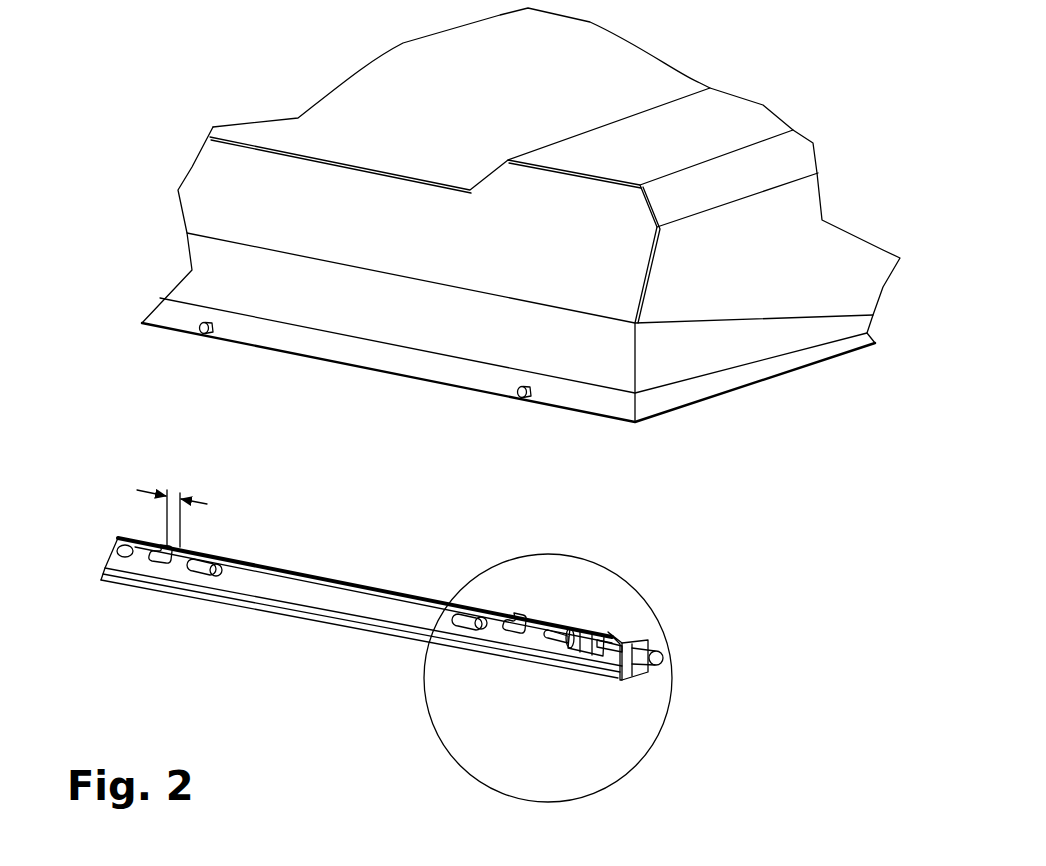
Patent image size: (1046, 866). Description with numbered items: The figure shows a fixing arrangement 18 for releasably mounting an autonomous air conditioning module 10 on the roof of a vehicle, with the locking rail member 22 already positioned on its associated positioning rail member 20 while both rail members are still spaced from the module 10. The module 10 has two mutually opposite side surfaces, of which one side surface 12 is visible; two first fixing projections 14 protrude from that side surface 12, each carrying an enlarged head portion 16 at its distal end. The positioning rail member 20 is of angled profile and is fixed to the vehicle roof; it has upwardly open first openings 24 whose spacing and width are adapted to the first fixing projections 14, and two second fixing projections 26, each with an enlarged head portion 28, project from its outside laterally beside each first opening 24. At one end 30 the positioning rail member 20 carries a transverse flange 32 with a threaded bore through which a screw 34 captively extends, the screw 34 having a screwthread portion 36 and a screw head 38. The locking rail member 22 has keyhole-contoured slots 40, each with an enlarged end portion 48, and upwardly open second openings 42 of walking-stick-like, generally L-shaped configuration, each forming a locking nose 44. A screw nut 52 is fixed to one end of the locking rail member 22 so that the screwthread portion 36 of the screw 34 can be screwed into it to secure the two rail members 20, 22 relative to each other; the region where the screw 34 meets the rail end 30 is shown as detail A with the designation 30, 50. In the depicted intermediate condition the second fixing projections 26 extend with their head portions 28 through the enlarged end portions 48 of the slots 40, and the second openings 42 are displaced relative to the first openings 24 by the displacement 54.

The autonomous air conditioning module 10 is at (387, 122).
The side surface 12 is at (370, 353).
The first fixing projection 14 is at (190, 340).
The enlarged head portion 16 is at (199, 327).
The fixing arrangement 18 is at (384, 633).
The positioning rail member 20 is at (361, 577).
The locking rail member 22 is at (352, 605).
The first opening 24 is at (184, 535).
The second fixing projection 26 is at (251, 668).
The enlarged head portion 28 is at (105, 577).
The end 30 is at (654, 737).
The transverse flange 32 is at (644, 640).
The screw 34 is at (676, 631).
The screwthread portion 36 is at (606, 652).
The screw head 38 is at (661, 666).
The slot 40 is at (119, 550).
The second opening 42 is at (160, 566).
The locking nose 44 is at (299, 680).
The end portion 48 is at (128, 533).
The fastener 50 is at (629, 688).
The screw nut 52 is at (548, 638).
The displacement 54 is at (172, 494).